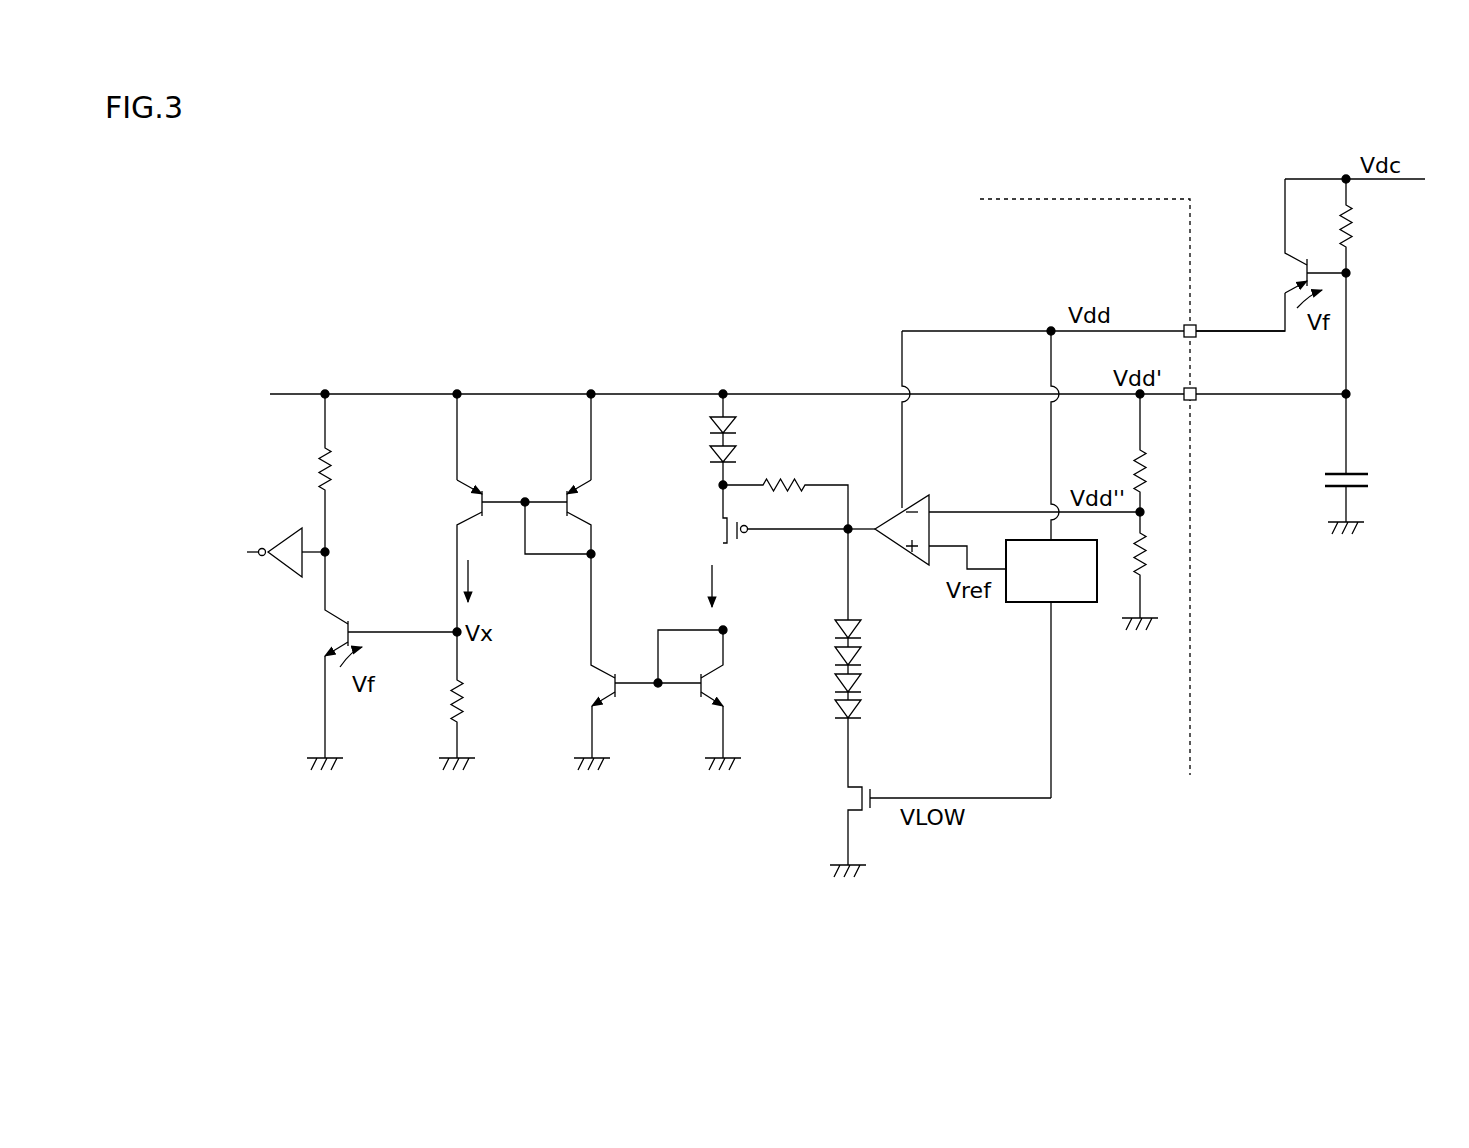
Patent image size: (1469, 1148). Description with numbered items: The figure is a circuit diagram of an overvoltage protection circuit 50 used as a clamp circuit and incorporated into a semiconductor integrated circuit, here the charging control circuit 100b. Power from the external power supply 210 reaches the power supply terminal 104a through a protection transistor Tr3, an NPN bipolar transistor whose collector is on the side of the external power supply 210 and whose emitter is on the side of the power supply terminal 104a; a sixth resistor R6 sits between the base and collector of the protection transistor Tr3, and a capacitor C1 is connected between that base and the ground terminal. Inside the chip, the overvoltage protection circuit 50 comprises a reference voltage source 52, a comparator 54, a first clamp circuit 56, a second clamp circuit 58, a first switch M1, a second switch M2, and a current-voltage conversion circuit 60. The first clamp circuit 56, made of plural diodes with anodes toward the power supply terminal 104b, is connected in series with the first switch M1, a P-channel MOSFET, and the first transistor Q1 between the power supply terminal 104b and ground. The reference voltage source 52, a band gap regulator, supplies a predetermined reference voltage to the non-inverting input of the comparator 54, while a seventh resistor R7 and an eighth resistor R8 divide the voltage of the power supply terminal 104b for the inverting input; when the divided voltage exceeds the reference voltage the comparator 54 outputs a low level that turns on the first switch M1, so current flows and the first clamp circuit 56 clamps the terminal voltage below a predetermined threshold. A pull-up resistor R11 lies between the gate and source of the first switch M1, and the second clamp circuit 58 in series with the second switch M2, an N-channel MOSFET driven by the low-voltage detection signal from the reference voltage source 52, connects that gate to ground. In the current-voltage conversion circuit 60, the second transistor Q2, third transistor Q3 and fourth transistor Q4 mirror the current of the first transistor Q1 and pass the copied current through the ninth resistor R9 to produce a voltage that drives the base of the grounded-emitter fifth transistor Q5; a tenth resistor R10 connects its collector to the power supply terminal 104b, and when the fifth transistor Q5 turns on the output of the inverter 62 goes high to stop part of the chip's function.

The overvoltage protection circuit 50 is at (757, 927).
The reference voltage source 52 is at (1072, 603).
The comparator 54 is at (905, 552).
The first clamp circuit 56 is at (710, 415).
The second clamp circuit 58 is at (823, 617).
The current-voltage conversion circuit 60 is at (591, 620).
The inverter 62 is at (285, 568).
The charging control circuit 100b is at (1095, 199).
The power supply terminal 104a is at (1196, 334).
The power supply terminal 104b is at (1196, 397).
The external power supply 210 is at (1377, 182).
The sixth resistor R6 is at (1363, 226).
The seventh resistor R7 is at (1156, 453).
The eighth resistor R8 is at (1156, 565).
The ninth resistor R9 is at (475, 695).
The tenth resistor R10 is at (300, 473).
The pull-up resistor R11 is at (785, 491).
The first transistor Q1 is at (729, 694).
The second transistor Q2 is at (628, 656).
The third transistor Q3 is at (598, 474).
The fourth transistor Q4 is at (496, 513).
The fifth transistor Q5 is at (372, 655).
The protection transistor Tr3 is at (1290, 272).
The first switch M1 is at (748, 538).
The second switch M2 is at (850, 798).
The capacitor C1 is at (1370, 480).